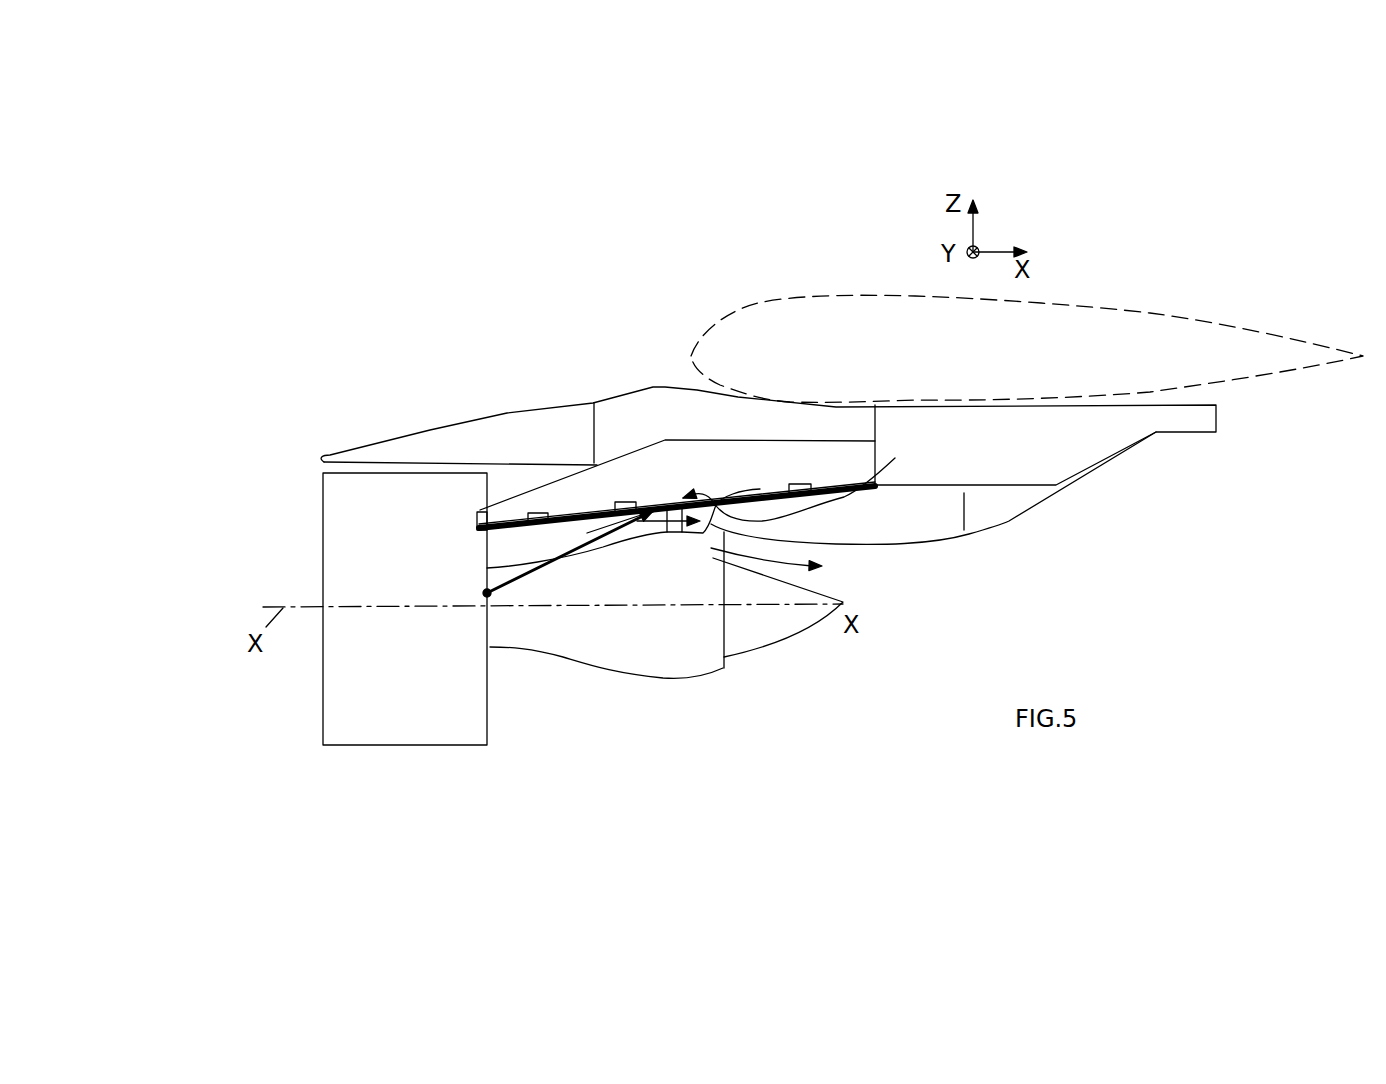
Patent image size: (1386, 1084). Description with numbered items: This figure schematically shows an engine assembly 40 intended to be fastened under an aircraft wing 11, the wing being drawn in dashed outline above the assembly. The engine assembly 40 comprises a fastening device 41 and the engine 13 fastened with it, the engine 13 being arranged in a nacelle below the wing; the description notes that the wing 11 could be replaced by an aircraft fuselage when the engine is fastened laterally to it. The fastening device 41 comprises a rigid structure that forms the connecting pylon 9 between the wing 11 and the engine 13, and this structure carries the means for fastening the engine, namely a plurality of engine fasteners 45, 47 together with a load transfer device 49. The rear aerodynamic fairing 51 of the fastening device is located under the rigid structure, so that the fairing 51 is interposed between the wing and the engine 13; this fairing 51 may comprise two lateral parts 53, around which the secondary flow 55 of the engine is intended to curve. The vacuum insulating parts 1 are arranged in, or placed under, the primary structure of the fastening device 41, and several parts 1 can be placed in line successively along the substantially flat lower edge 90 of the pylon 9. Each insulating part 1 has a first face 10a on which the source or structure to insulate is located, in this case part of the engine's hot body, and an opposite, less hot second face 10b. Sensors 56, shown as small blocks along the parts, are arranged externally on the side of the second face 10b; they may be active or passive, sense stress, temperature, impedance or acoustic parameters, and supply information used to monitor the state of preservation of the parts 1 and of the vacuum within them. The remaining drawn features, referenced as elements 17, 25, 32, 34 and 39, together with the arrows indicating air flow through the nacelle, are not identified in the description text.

The insulating part 1 is at (754, 491).
The connecting pylon 9 is at (815, 460).
The first face 10a is at (510, 528).
The second face 10b is at (505, 520).
The aircraft wing 11 is at (1150, 340).
The engine 13 is at (642, 688).
The inner casing 17 is at (507, 648).
The nacelle inlet 25 is at (340, 482).
The hinge 32 is at (505, 518).
The exhaust flow 34 is at (798, 660).
The exhaust plug 39 is at (760, 563).
The engine assembly 40 is at (212, 478).
The fastening device 41 is at (677, 358).
The engine fastener 45 is at (466, 502).
The engine fastener 47 is at (668, 515).
The load transfer device 49 is at (552, 568).
The rear aerodynamic fairing 51 is at (950, 526).
The lateral part 53 is at (924, 500).
The secondary flow 55 is at (600, 527).
The sensor 56 is at (625, 502).
The lower edge 90 is at (551, 519).